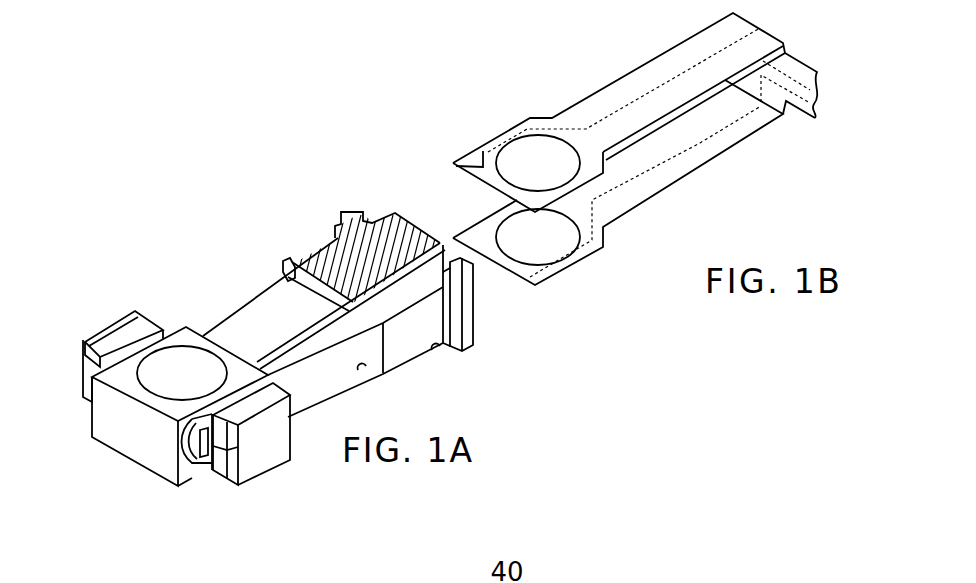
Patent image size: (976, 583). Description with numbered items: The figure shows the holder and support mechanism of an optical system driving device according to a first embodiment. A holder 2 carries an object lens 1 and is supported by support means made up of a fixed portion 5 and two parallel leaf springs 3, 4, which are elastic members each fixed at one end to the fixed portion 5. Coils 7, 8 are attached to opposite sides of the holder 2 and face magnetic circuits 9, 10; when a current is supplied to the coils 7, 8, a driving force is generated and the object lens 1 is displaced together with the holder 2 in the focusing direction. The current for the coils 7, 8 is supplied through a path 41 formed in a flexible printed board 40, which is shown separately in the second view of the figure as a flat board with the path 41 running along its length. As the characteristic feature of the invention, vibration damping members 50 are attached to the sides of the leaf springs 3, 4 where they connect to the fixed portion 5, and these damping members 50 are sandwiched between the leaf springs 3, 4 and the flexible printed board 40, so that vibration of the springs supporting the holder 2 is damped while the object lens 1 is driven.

In FIG. 1A, the object lens 1 is at (180, 382).
In FIG. 1A, the holder 2 is at (131, 438).
In FIG. 1A, the leaf spring 3 is at (253, 328).
In FIG. 1A, the leaf spring 4 is at (306, 374).
In FIG. 1A, the fixed portion 5 is at (428, 332).
In FIG. 1A, the coil 7 is at (191, 459).
In FIG. 1A, the coil 8 is at (97, 360).
In FIG. 1A, the magnetic circuit 9 is at (226, 482).
In FIG. 1A, the magnetic circuit 10 is at (118, 318).
In FIG. 1A, the vibration damping member 50 is at (371, 262).
In FIG. 1B, the flexible printed board 40 is at (655, 200).
In FIG. 1B, the path 41 is at (648, 92).